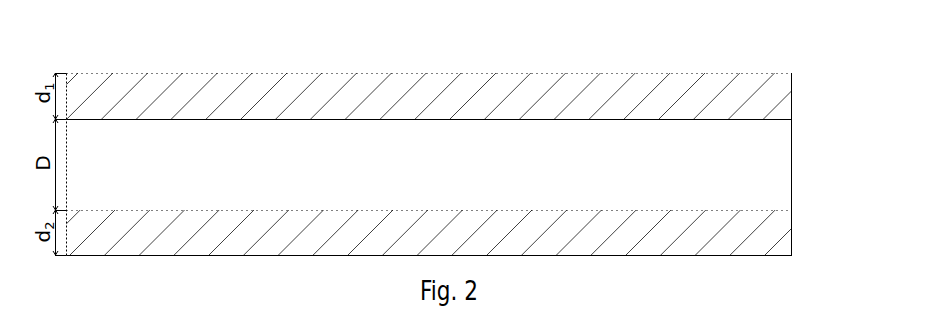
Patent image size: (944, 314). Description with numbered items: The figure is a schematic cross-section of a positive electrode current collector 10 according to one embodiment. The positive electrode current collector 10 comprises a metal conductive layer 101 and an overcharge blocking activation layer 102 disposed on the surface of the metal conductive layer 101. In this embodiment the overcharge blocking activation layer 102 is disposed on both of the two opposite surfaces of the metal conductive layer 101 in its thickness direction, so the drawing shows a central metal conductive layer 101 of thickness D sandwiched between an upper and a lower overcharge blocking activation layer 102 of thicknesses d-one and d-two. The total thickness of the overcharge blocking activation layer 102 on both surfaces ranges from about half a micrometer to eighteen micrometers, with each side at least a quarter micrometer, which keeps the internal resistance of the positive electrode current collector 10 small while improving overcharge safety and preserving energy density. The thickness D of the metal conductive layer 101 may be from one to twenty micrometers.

The positive electrode current collector 10 is at (423, 32).
The metal conductive layer 101 is at (792, 165).
The overcharge blocking activation layer 102 is at (792, 95).